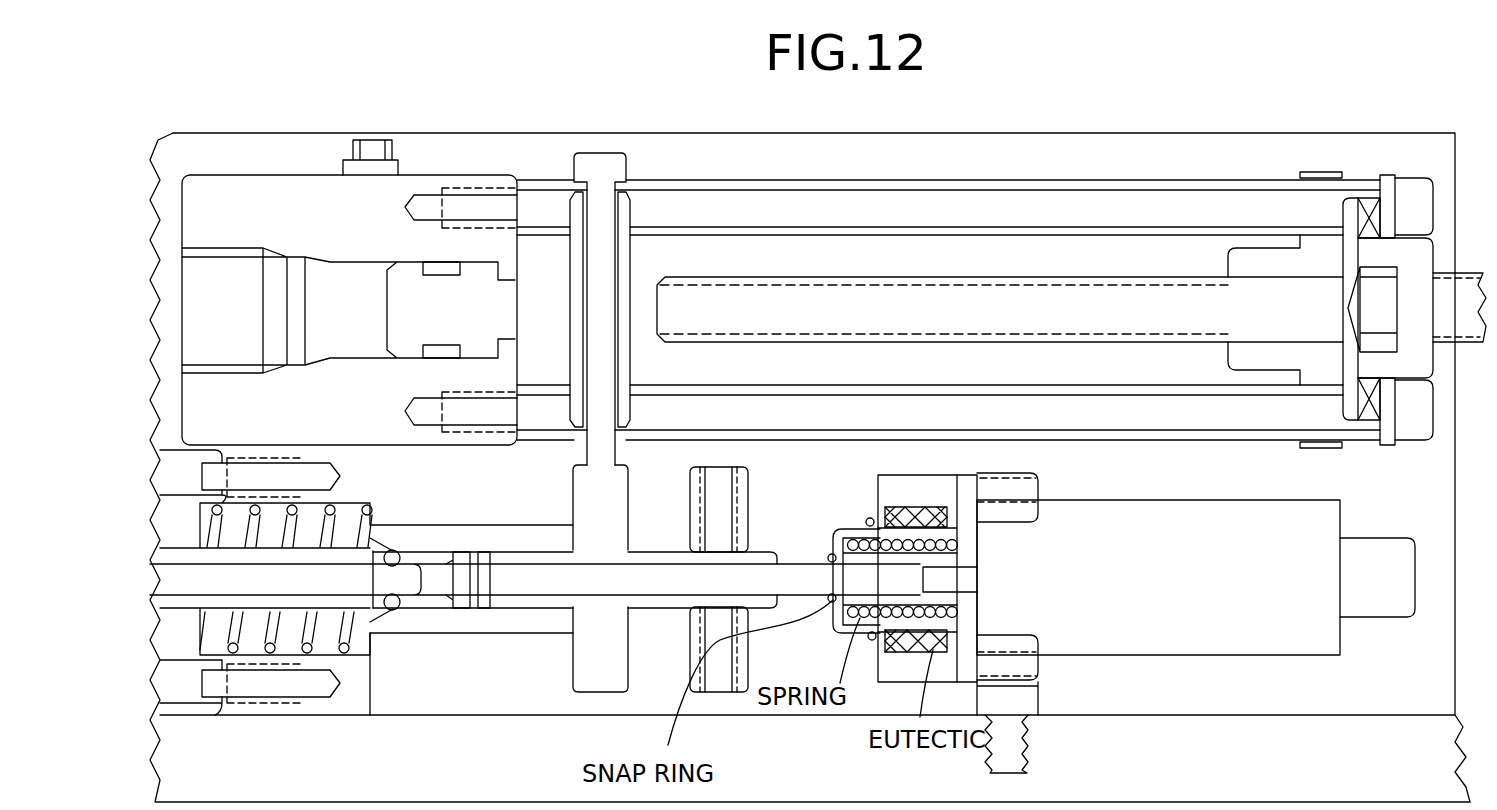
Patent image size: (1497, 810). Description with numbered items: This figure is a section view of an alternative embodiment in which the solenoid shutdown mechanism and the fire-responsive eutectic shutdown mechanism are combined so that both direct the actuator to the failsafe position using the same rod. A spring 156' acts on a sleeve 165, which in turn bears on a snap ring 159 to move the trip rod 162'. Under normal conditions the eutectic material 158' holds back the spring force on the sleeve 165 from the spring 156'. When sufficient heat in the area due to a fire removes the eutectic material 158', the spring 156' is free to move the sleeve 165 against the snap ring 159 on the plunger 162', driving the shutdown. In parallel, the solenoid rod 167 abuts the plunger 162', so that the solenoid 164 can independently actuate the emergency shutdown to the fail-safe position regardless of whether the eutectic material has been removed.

The spring 156' is at (880, 555).
The eutectic material 158' is at (968, 548).
The snap ring 159 is at (826, 603).
The trip rod 162' is at (590, 549).
The solenoid 164 is at (1182, 637).
The sleeve 165 is at (873, 623).
The solenoid rod 167 is at (947, 578).